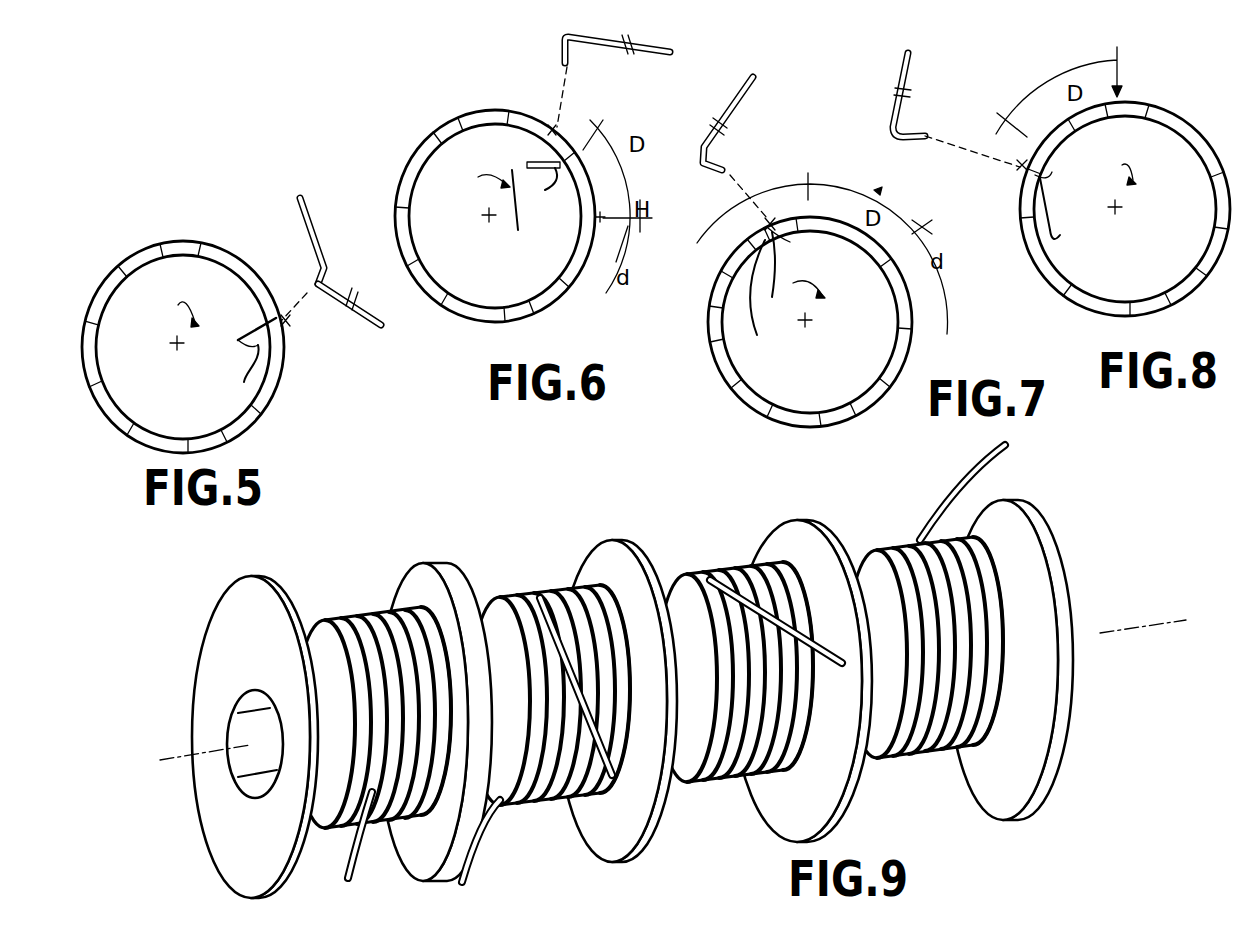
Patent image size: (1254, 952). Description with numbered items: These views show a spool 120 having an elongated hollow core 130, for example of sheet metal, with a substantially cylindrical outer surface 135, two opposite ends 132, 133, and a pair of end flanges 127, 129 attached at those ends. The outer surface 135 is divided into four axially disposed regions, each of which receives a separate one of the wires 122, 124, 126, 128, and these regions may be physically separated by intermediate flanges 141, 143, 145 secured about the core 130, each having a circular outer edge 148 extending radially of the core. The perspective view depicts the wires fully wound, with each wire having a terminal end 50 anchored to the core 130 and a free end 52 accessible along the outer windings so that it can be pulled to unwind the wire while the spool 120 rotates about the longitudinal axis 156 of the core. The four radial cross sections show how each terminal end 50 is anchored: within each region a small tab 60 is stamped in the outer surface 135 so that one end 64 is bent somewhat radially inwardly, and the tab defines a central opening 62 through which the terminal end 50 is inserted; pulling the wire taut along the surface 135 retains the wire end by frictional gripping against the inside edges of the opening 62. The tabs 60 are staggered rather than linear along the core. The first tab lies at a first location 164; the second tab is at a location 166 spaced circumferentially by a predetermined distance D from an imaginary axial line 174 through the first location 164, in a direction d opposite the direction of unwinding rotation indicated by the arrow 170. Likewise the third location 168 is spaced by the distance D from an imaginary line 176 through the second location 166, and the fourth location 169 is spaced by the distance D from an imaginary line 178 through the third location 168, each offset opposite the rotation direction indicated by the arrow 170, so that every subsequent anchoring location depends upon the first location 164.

In FIG. 5, the terminal end 50 is at (313, 263).
In FIG. 6, the terminal end 50 is at (565, 47).
In FIG. 7, the terminal end 50 is at (725, 215).
In FIG. 8, the terminal end 50 is at (972, 151).
In FIG. 5, the free end 52 is at (367, 323).
In FIG. 6, the free end 52 is at (650, 57).
In FIG. 7, the free end 52 is at (757, 102).
In FIG. 8, the free end 52 is at (900, 85).
In FIG. 9, the free end 52 is at (462, 883).
In FIG. 5, the tab 60 is at (248, 387).
In FIG. 6, the tab 60 is at (530, 160).
In FIG. 7, the tab 60 is at (772, 272).
In FIG. 8, the tab 60 is at (1065, 230).
In FIG. 5, the central opening 62 is at (235, 338).
In FIG. 6, the central opening 62 is at (541, 180).
In FIG. 7, the central opening 62 is at (800, 242).
In FIG. 8, the central opening 62 is at (1052, 172).
In FIG. 5, the tab end 64 is at (242, 327).
In FIG. 6, the tab end 64 is at (525, 216).
In FIG. 7, the tab end 64 is at (764, 303).
In FIG. 8, the tab end 64 is at (1066, 225).
In FIG. 5, the spool 120 is at (185, 190).
In FIG. 6, the spool 120 is at (452, 90).
In FIG. 7, the spool 120 is at (777, 193).
In FIG. 8, the spool 120 is at (1038, 62).
In FIG. 9, the spool 120 is at (233, 577).
In FIG. 5, the first wire 122 is at (300, 198).
In FIG. 9, the first wire 122 is at (376, 612).
In FIG. 6, the second wire 124 is at (667, 57).
In FIG. 9, the second wire 124 is at (558, 588).
In FIG. 7, the third wire 126 is at (754, 85).
In FIG. 9, the third wire 126 is at (753, 570).
In FIG. 8, the fourth wire 128 is at (905, 60).
In FIG. 9, the fourth wire 128 is at (906, 546).
In FIG. 9, the flange 127 is at (243, 843).
In FIG. 9, the flange 129 is at (1070, 752).
In FIG. 5, the core 130 is at (127, 437).
In FIG. 6, the core 130 is at (448, 305).
In FIG. 7, the core 130 is at (730, 392).
In FIG. 8, the core 130 is at (1067, 283).
In FIG. 9, the core 130 is at (245, 697).
In FIG. 9, the first end 132 is at (233, 793).
In FIG. 9, the second end 133 is at (1078, 620).
In FIG. 5, the outer surface 135 is at (102, 277).
In FIG. 6, the outer surface 135 is at (395, 228).
In FIG. 7, the outer surface 135 is at (710, 307).
In FIG. 8, the outer surface 135 is at (1023, 238).
In FIG. 9, the flange 141 is at (497, 840).
In FIG. 9, the flange 143 is at (683, 817).
In FIG. 9, the flange 145 is at (868, 798).
In FIG. 9, the circular outer edge 148 is at (452, 566).
In FIG. 5, the longitudinal axis 156 is at (177, 350).
In FIG. 6, the longitudinal axis 156 is at (489, 218).
In FIG. 7, the longitudinal axis 156 is at (808, 325).
In FIG. 8, the longitudinal axis 156 is at (1115, 212).
In FIG. 9, the longitudinal axis 156 is at (182, 757).
In FIG. 5, the first location 164 is at (288, 324).
In FIG. 6, the second location 166 is at (548, 128).
In FIG. 7, the third location 168 is at (808, 173).
In FIG. 8, the fourth location 169 is at (1020, 172).
In FIG. 5, the arrow 170 is at (178, 303).
In FIG. 6, the arrow 170 is at (478, 177).
In FIG. 7, the arrow 170 is at (815, 300).
In FIG. 8, the arrow 170 is at (1122, 165).
In FIG. 6, the imaginary line 174 is at (602, 228).
In FIG. 7, the imaginary line 176 is at (717, 250).
In FIG. 8, the imaginary line 178 is at (1120, 90).